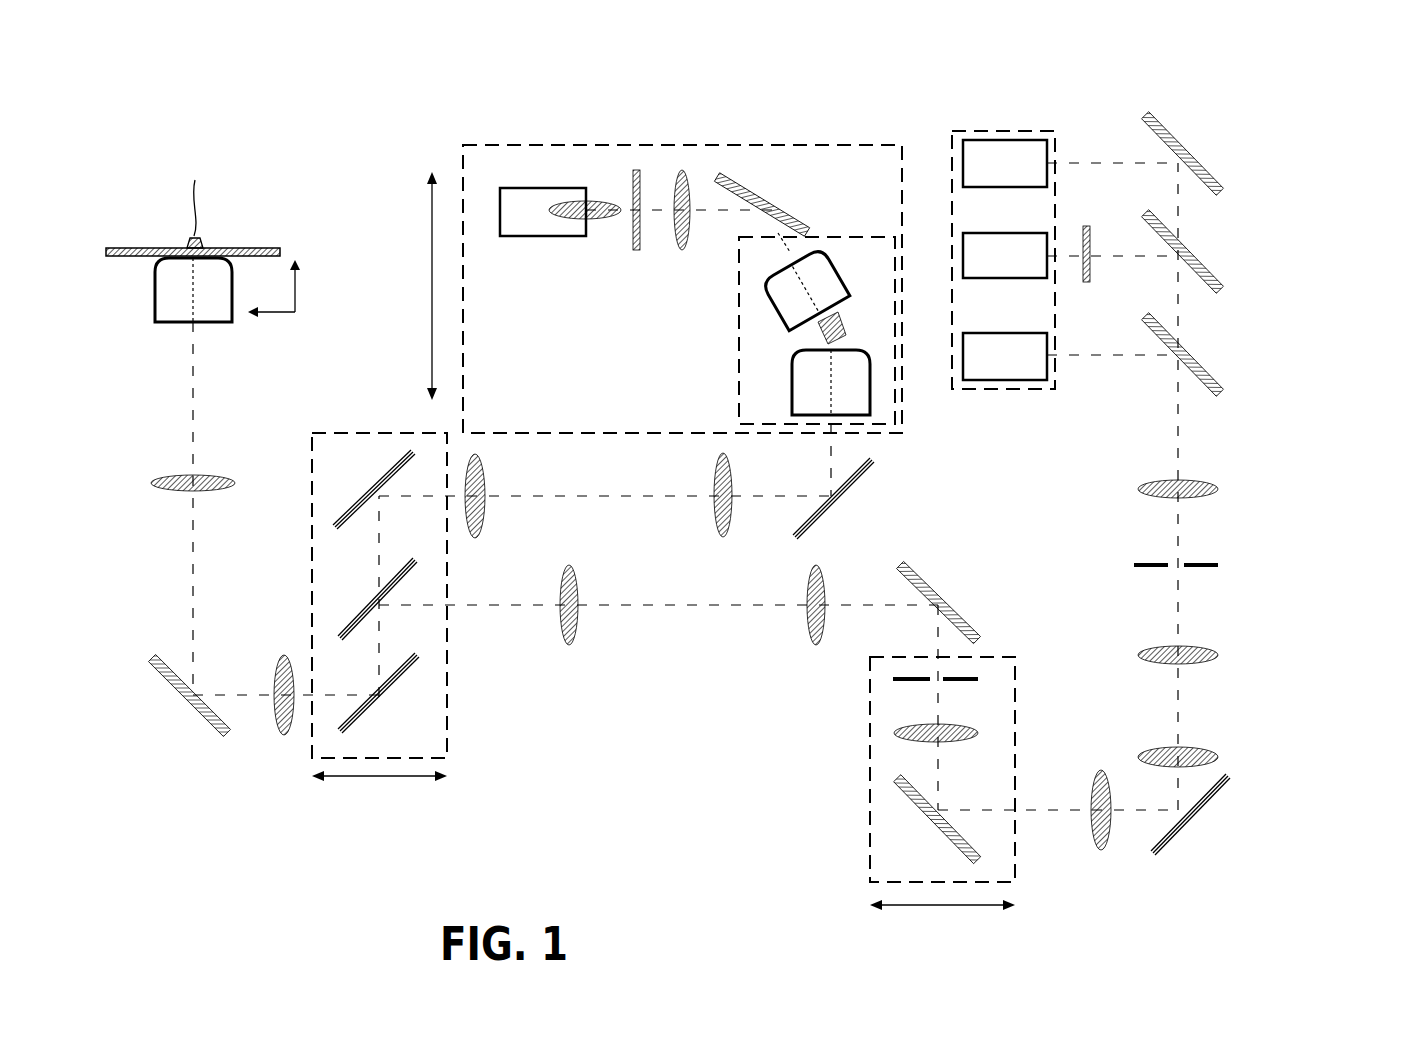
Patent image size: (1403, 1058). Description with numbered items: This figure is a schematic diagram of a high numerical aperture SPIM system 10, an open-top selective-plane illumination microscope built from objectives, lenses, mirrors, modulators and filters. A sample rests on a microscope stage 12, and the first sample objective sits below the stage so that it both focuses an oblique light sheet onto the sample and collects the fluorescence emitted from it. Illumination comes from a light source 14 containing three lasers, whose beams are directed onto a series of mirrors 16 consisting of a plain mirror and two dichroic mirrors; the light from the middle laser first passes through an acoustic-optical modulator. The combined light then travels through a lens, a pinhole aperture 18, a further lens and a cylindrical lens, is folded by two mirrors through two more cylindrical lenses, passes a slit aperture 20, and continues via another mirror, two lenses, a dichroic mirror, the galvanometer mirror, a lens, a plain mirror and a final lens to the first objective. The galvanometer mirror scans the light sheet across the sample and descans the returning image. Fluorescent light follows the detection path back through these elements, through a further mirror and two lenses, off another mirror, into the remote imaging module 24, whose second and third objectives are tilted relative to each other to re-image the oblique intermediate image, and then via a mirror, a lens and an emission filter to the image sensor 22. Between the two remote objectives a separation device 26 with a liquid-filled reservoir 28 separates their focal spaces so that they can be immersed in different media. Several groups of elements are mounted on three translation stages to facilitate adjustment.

The high numerical aperture SPIM system 10 is at (1362, 100).
The microscope stage 12 is at (232, 248).
The light source 14 is at (988, 128).
The mirrors 16 is at (1260, 105).
The pinhole aperture 18 is at (1222, 565).
The slit aperture 20 is at (985, 678).
The image sensor 22 is at (545, 225).
The remote imaging module 24 is at (733, 362).
The separation device 26 is at (832, 317).
The reservoir 28 is at (838, 337).